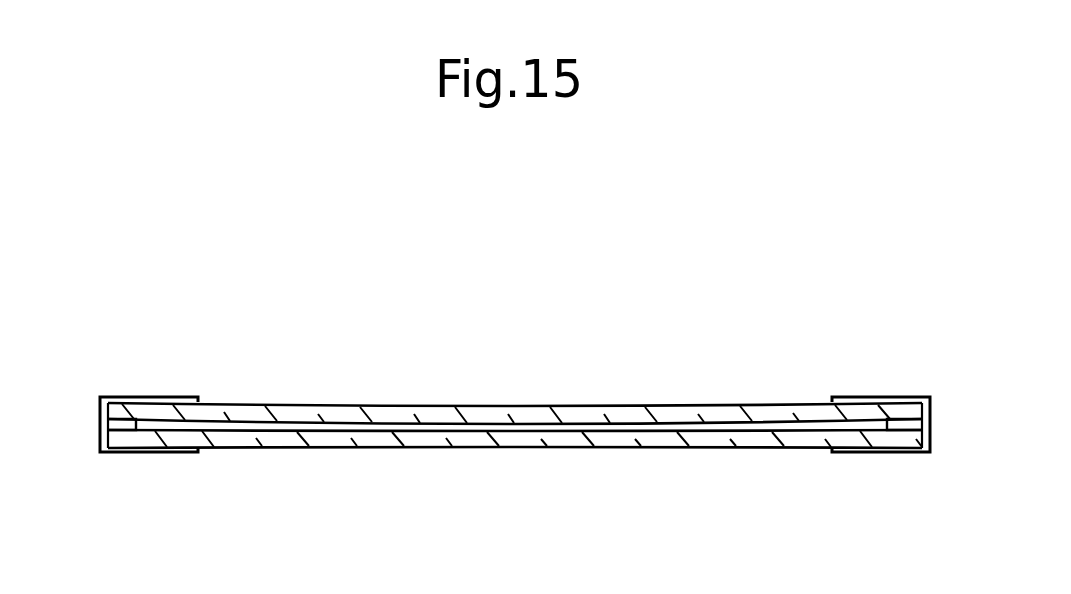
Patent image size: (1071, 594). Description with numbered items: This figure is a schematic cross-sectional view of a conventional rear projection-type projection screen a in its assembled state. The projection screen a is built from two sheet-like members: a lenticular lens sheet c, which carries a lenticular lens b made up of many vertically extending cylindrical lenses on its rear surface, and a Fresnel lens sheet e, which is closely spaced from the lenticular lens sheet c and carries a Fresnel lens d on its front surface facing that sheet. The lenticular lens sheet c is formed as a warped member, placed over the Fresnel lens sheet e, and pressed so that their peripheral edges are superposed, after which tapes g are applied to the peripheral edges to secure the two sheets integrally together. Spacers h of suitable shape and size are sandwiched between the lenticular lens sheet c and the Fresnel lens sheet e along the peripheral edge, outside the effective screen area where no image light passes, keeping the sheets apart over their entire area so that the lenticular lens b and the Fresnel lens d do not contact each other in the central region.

The projection screen a is at (365, 290).
The lenticular lens b is at (716, 411).
The lenticular lens sheet c is at (766, 404).
The Fresnel lens d is at (640, 427).
The Fresnel lens sheet e is at (733, 448).
The tapes g is at (155, 396).
The spacers h is at (120, 438).